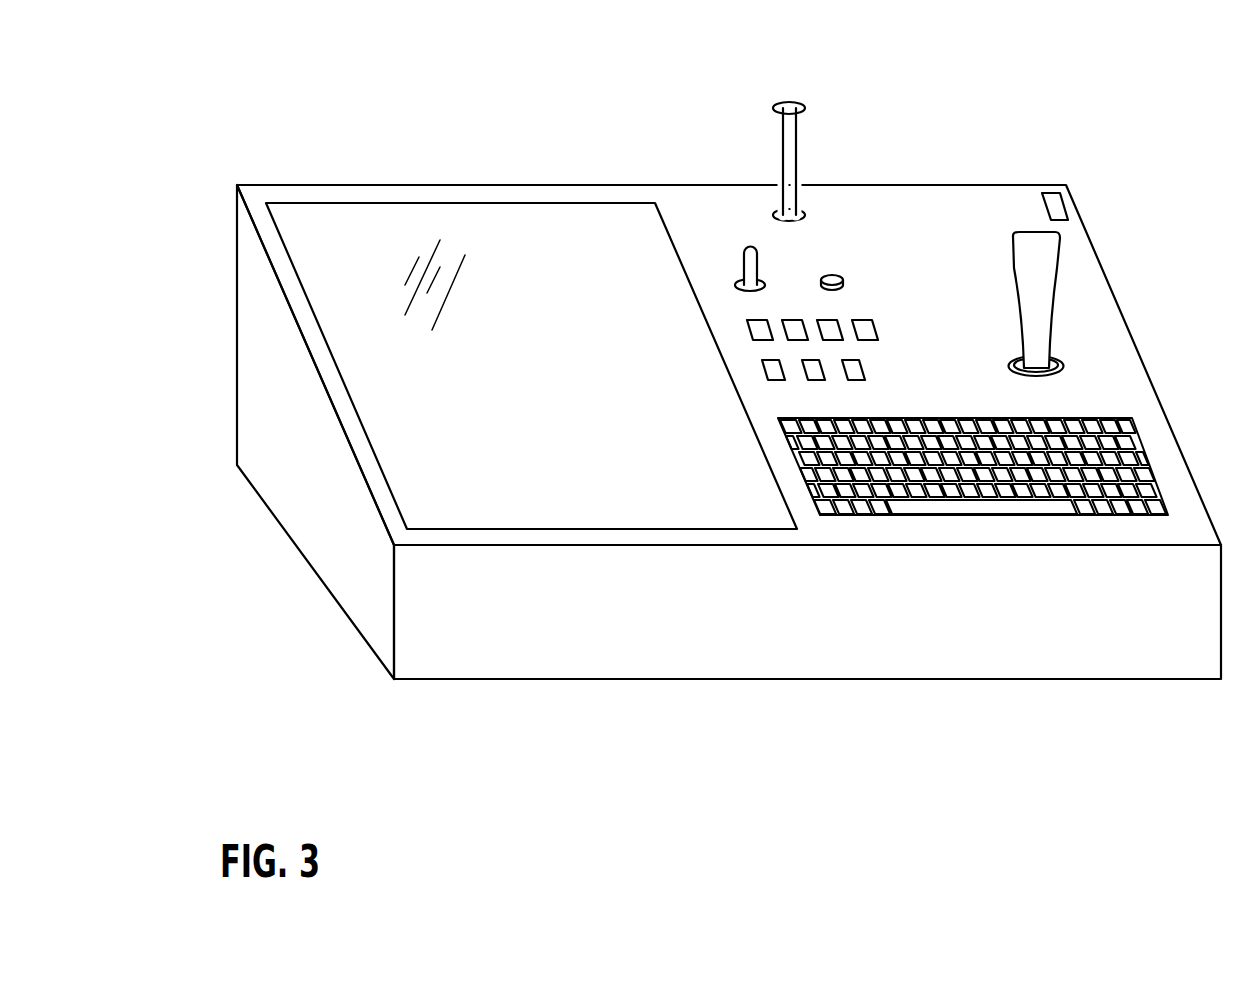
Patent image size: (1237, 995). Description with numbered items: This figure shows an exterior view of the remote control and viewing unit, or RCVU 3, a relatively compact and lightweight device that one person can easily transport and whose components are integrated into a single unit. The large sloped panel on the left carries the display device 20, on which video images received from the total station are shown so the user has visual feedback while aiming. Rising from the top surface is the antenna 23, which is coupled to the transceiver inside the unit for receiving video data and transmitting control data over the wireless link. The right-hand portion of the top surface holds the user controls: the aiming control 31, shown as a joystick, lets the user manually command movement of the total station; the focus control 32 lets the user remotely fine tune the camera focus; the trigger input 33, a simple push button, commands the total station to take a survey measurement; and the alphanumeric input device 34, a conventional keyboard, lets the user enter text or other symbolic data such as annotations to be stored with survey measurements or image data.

The remote control and viewing unit 3 is at (1080, 100).
The display device 20 is at (503, 203).
The antenna 23 is at (797, 135).
The aiming control 31 is at (1058, 285).
The focus control 32 is at (757, 268).
The trigger input 33 is at (843, 279).
The alphanumeric input device 34 is at (911, 418).